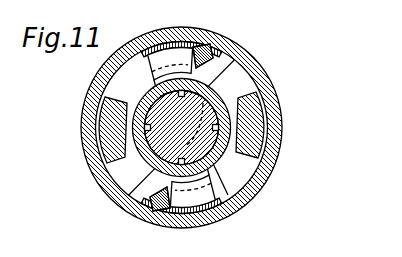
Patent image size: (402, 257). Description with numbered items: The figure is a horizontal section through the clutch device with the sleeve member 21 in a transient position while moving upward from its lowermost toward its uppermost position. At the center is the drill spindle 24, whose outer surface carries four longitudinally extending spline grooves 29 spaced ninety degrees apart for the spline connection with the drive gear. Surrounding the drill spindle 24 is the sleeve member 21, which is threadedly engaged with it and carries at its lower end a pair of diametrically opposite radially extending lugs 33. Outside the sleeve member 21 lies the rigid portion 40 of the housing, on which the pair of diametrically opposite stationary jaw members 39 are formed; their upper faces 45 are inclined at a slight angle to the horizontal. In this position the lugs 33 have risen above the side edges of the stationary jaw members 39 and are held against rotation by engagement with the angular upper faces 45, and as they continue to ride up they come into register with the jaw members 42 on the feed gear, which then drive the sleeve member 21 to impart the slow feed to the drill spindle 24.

The rigid portion of the housing 40 is at (276, 134).
The sleeve member 21 is at (214, 88).
The spline grooves 29 is at (148, 157).
The jaw members 42 is at (112, 122).
The lugs 33 is at (165, 63).
The stationary jaw members 39 is at (213, 55).
The upper faces 45 is at (207, 63).
The drill spindle 24 is at (240, 176).